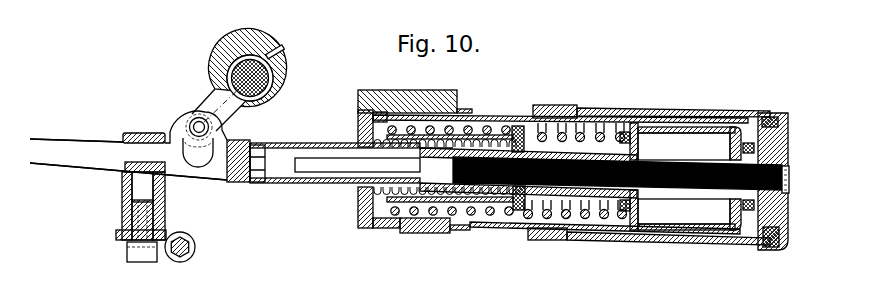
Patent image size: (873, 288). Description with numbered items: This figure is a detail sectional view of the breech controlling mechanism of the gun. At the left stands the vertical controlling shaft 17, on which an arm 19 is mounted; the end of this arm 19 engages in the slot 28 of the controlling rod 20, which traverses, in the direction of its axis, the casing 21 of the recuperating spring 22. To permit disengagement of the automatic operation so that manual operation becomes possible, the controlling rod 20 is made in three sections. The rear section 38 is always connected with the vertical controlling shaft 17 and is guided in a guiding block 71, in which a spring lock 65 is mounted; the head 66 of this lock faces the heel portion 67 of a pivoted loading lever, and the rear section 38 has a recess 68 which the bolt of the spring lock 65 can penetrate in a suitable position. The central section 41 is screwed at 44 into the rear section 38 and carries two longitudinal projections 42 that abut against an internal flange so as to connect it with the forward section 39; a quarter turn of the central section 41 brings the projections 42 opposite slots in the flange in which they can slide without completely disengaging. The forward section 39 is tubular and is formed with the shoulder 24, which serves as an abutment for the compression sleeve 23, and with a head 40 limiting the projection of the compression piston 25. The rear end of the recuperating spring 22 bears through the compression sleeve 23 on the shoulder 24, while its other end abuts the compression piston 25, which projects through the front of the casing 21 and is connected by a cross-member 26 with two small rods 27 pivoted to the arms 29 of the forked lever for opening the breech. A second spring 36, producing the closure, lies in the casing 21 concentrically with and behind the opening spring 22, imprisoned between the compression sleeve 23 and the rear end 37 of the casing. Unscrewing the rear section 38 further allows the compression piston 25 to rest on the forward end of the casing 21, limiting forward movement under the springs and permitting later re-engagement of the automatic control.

The vertical controlling shaft 17 is at (258, 80).
The arm 19 is at (222, 100).
The guiding block 71 is at (138, 133).
The rear section 38 is at (170, 168).
The slot 28 is at (200, 152).
The screw connection 44 is at (228, 143).
The controlling rod 20 is at (240, 168).
The longitudinal projections 42 is at (318, 160).
The central section 41 is at (283, 157).
The second spring 36 is at (362, 133).
The rear end of the casing 37 is at (362, 201).
The compression sleeve 23 is at (478, 135).
The casing 21 is at (487, 218).
The shoulder 24 is at (515, 138).
The recuperating spring 22 is at (540, 121).
The compression piston 25 is at (633, 129).
The forward section 39 is at (700, 197).
The arms 29 is at (565, 240).
The small rods 27 is at (642, 236).
The cross-member 26 is at (794, 135).
The head 40 is at (797, 176).
The recess 68 is at (128, 170).
The spring lock 65 is at (142, 182).
The heel portion 67 is at (120, 239).
The head 66 is at (140, 254).